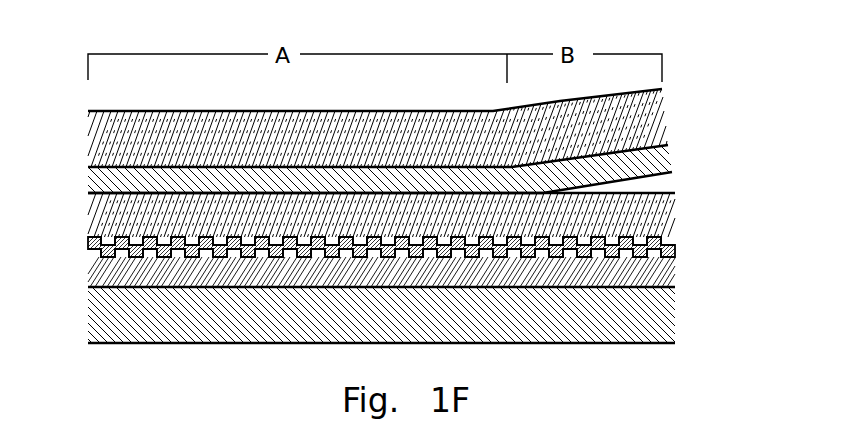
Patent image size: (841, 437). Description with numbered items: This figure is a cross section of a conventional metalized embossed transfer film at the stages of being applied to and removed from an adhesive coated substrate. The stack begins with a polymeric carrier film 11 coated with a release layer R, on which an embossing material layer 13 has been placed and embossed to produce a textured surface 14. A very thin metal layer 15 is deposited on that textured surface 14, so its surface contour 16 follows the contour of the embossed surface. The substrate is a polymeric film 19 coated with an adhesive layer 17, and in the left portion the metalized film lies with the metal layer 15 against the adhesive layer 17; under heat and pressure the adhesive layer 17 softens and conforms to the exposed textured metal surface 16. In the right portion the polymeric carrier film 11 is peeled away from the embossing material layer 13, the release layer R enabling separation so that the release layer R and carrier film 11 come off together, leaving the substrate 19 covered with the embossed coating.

The polymeric carrier film 11 is at (108, 147).
The release layer R is at (110, 173).
The embossing material layer 13 is at (670, 205).
The textured surface 14 is at (152, 236).
The metal layer 15 is at (675, 240).
The surface contour 16 is at (130, 258).
The adhesive layer 17 is at (640, 262).
The polymeric film 19 is at (642, 308).